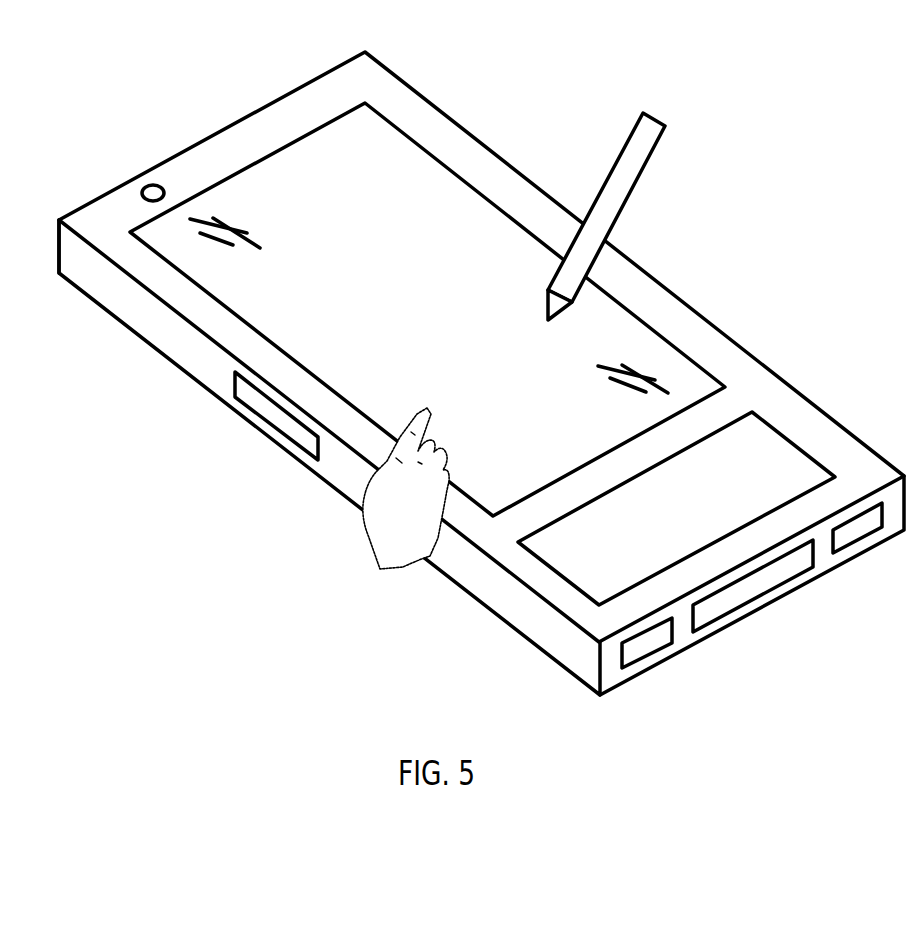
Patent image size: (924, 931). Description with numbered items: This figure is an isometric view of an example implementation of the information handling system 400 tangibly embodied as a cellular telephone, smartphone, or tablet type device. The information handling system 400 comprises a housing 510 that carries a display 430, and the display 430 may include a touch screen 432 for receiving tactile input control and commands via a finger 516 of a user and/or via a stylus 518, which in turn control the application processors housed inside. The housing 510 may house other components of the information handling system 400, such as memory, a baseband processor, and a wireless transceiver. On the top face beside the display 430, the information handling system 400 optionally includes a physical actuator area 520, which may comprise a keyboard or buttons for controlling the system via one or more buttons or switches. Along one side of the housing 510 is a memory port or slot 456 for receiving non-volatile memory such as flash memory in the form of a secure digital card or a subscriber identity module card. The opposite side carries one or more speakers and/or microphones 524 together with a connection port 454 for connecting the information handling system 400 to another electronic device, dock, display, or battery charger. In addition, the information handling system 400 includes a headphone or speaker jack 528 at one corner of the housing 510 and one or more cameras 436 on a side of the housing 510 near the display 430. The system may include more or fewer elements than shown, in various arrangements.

The information handling system 400 is at (495, 88).
The housing 510 is at (308, 83).
The headphone or speaker jack 528 is at (85, 206).
The display 430 is at (366, 172).
The touch screen 432 is at (456, 308).
The camera 436 is at (146, 184).
The physical actuator area 520 is at (765, 463).
The memory port or slot 456 is at (252, 410).
The connection port 454 is at (765, 593).
The speakers and/or microphones 524 is at (648, 657).
The stylus 518 is at (627, 140).
The finger 516 is at (420, 407).